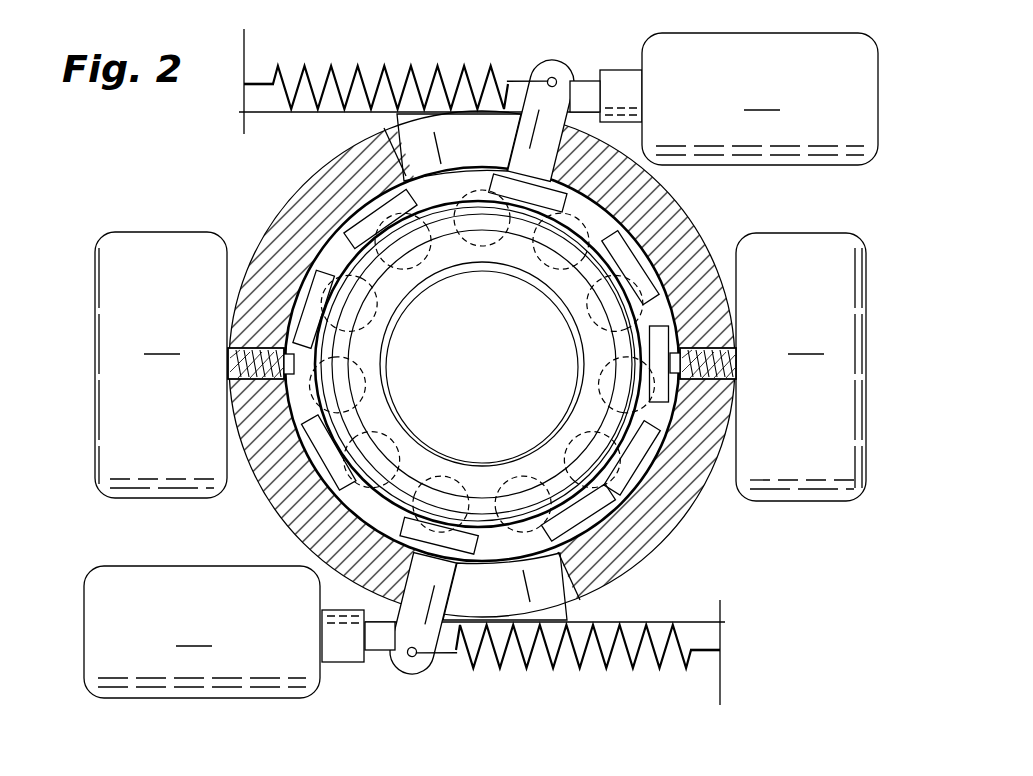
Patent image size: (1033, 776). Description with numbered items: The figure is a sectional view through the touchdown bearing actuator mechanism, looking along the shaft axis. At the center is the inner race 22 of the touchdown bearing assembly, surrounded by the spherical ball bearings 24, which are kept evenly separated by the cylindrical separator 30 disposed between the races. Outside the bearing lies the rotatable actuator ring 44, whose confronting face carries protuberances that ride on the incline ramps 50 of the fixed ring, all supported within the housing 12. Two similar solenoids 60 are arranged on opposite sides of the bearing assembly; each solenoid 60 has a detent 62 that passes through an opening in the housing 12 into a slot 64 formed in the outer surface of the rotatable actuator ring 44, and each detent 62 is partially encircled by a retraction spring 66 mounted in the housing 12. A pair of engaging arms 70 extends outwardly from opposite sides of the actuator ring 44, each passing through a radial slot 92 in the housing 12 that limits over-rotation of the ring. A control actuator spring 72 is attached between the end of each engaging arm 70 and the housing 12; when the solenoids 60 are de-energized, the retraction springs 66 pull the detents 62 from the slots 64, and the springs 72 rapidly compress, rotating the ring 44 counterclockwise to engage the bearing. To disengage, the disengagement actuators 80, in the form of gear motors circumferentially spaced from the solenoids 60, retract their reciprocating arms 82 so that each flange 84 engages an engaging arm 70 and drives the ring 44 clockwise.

The housing 12 is at (598, 594).
The inner race 22 is at (474, 456).
The spherical ball bearings 24 is at (342, 246).
The cylindrical separator 30 is at (660, 450).
The rotatable actuator ring 44 is at (455, 178).
The incline ramps 50 is at (625, 445).
The solenoids 60 is at (480, 366).
The detent 62 is at (250, 343).
The slot 64 is at (262, 418).
The retraction spring 66 is at (227, 376).
The engaging arms 70 is at (400, 672).
The control actuator spring 72 is at (342, 64).
The disengagement actuators 80 is at (481, 365).
The reciprocating arm 82 is at (356, 665).
The flange 84 is at (650, 652).
The slots 92 is at (497, 602).